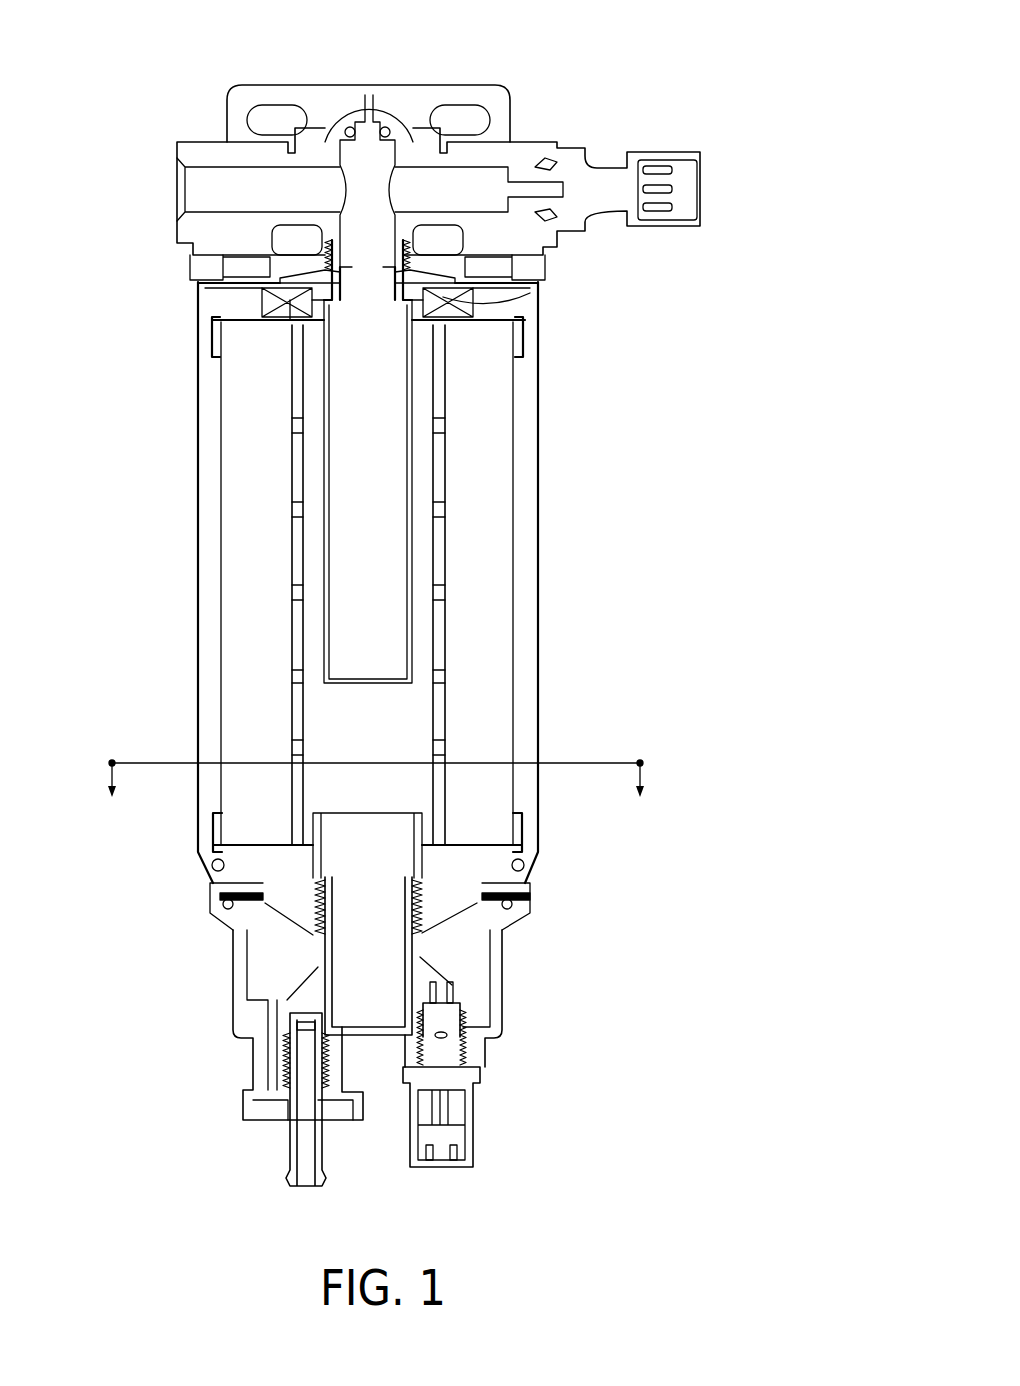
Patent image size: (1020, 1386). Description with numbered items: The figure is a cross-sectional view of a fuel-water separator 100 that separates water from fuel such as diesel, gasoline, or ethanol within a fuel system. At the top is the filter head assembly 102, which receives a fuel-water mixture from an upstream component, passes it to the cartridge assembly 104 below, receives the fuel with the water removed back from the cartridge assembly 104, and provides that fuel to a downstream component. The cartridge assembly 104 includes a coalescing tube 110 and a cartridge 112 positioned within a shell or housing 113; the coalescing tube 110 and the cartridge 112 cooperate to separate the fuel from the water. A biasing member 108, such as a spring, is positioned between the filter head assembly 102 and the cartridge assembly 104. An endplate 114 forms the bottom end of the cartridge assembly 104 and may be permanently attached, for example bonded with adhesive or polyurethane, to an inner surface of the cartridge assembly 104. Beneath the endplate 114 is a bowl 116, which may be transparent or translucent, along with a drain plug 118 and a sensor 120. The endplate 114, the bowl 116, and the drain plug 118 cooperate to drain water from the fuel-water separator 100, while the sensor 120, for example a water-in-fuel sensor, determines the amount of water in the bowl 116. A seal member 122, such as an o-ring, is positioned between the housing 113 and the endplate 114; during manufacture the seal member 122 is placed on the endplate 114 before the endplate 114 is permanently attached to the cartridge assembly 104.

The fuel-water separator 100 is at (435, 593).
The filter head assembly 102 is at (128, 170).
The cartridge assembly 104 is at (372, 561).
The biasing member 108 is at (520, 302).
The coalescing tube 110 is at (425, 393).
The cartridge 112 is at (470, 455).
The housing 113 is at (540, 582).
The endplate 114 is at (207, 913).
The bowl 116 is at (498, 972).
The drain plug 118 is at (292, 1163).
The sensor 120 is at (470, 1148).
The seal member 122 is at (513, 861).